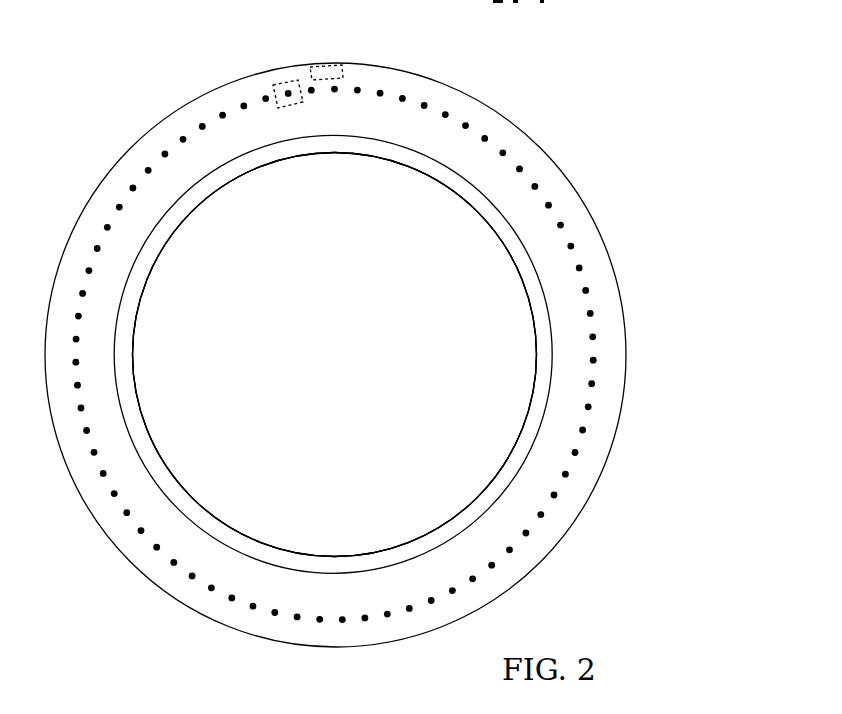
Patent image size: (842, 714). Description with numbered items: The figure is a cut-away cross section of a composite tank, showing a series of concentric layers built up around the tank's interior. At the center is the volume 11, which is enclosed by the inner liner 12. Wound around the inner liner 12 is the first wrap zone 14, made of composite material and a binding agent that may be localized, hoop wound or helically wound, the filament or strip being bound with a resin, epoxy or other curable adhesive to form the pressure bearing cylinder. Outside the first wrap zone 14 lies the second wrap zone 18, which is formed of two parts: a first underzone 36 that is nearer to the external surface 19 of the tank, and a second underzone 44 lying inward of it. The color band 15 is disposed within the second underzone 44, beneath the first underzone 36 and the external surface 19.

The volume 11 is at (342, 453).
The inner liner 12 is at (520, 252).
The first wrap zone 14 is at (384, 122).
The color band 15 is at (597, 347).
The second wrap zone 18 is at (207, 107).
The external surface 19 is at (540, 145).
The first underzone 36 is at (336, 66).
The second underzone 44 is at (275, 85).